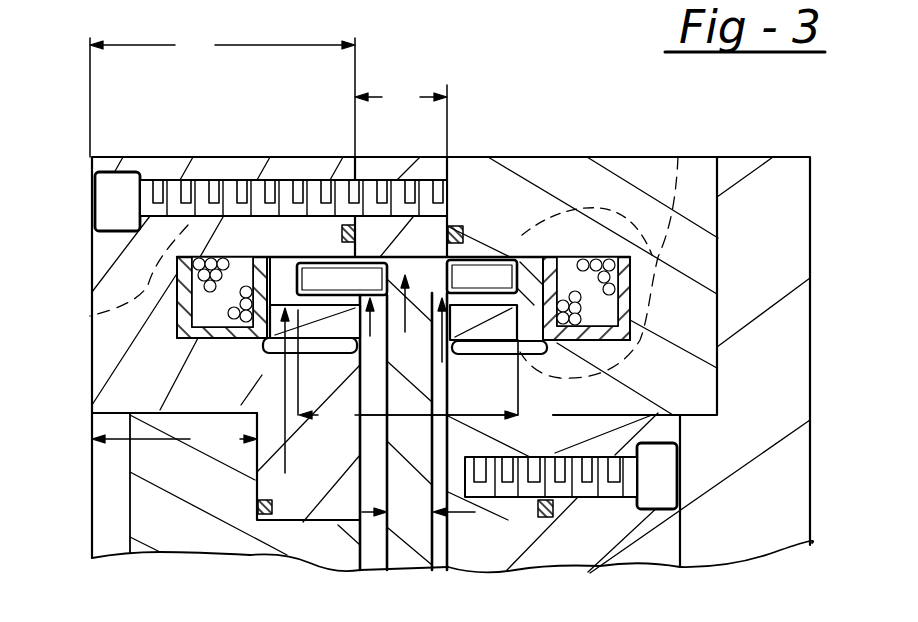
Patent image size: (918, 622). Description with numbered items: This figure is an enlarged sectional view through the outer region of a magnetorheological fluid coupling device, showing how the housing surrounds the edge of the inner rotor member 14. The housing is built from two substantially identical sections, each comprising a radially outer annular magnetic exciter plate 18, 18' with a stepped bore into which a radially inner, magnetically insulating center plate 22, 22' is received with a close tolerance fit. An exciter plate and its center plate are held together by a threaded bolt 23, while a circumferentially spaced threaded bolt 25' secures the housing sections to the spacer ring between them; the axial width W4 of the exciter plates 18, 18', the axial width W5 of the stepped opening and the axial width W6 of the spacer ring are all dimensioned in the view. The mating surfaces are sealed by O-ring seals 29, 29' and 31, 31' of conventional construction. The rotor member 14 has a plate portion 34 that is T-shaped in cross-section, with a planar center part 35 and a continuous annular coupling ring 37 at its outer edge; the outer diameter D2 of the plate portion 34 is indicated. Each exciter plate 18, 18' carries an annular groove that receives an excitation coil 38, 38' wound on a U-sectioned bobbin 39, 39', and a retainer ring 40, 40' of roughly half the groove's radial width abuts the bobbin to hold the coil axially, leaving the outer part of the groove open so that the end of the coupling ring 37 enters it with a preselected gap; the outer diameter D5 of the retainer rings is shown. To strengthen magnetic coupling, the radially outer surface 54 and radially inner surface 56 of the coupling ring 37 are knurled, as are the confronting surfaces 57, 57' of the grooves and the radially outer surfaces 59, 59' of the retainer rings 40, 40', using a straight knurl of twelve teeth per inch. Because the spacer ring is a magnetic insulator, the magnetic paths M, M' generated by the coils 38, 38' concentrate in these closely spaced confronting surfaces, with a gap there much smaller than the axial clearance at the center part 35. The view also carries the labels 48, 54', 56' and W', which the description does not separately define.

The inner rotor member 14 is at (448, 555).
The magnetic exciter plate 18 is at (584, 340).
The magnetic exciter plate 18' is at (239, 361).
The center magnetically insulating plate 22 is at (703, 528).
The center magnetically insulating plate 22' is at (86, 483).
The threaded bolt 23 is at (660, 468).
The threaded bolt 25' is at (271, 172).
The O-ring seal 29 is at (567, 523).
The O-ring seal 29' is at (218, 522).
The O-ring seal 31 is at (403, 185).
The O-ring seal 31' is at (329, 239).
The plate portion 34 is at (415, 445).
The center part 35 is at (386, 543).
The coupling ring 37 is at (437, 257).
The excitation coil 38 is at (592, 230).
The excitation coil 38' is at (151, 297).
The bobbin 39 is at (655, 289).
The bobbin 39' is at (192, 324).
The retainer ring 40 is at (526, 376).
The retainer ring 40' is at (268, 374).
The housing wall 48 is at (722, 163).
The radially outer surface 54 is at (477, 326).
The sleeve 54' is at (340, 335).
The radially inner surface 56 is at (439, 377).
The ring 56' is at (308, 436).
The confronting surface of groove 57 is at (501, 229).
The confronting surface of groove 57' is at (299, 213).
The radially outer surface of retainer ring 59 is at (559, 204).
The radially outer surface of retainer ring 59' is at (198, 173).
The magnetic path M is at (600, 239).
The magnetic path M' is at (113, 282).
The axial width of exciter plates W4 is at (222, 94).
The axial width of stepped opening W5 is at (174, 439).
The axial width of spacer ring W6 is at (401, 120).
The width dimension W' is at (408, 369).
The outer diameter of plate portion D2 is at (406, 318).
The outer diameter of retainer rings D5 is at (295, 406).